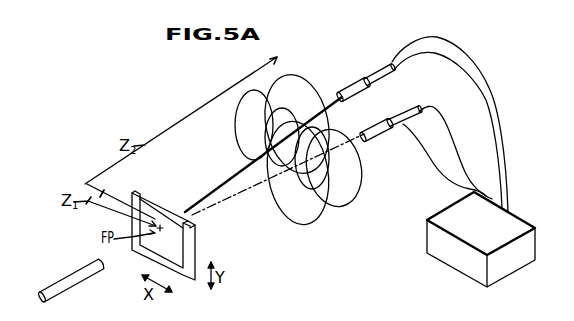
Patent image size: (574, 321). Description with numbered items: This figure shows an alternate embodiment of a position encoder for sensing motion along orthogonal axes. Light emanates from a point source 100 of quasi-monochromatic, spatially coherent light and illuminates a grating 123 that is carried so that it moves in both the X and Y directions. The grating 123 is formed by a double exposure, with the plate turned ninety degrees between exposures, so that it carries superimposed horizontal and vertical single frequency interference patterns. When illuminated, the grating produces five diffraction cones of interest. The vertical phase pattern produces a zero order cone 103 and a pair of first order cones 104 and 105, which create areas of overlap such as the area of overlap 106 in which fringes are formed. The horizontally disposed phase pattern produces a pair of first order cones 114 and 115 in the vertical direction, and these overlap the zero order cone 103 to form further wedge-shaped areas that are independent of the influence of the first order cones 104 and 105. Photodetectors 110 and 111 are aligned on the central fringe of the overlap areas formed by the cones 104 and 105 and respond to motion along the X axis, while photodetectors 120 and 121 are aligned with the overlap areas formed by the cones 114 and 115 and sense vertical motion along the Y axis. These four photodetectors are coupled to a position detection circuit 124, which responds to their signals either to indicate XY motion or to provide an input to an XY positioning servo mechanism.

The point source 100 is at (83, 271).
The zero order cone 103 is at (313, 190).
The first order cone 104 is at (236, 128).
The first order cone 105 is at (356, 208).
The area of overlap 106 is at (267, 159).
The photodetector 110 is at (350, 86).
The photodetector 111 is at (419, 117).
The first order cone 114 is at (333, 92).
The first order cone 115 is at (316, 222).
The photodetector 120 is at (389, 74).
The photodetector 121 is at (377, 139).
The grating 123 is at (155, 214).
The position detection circuit 124 is at (523, 221).